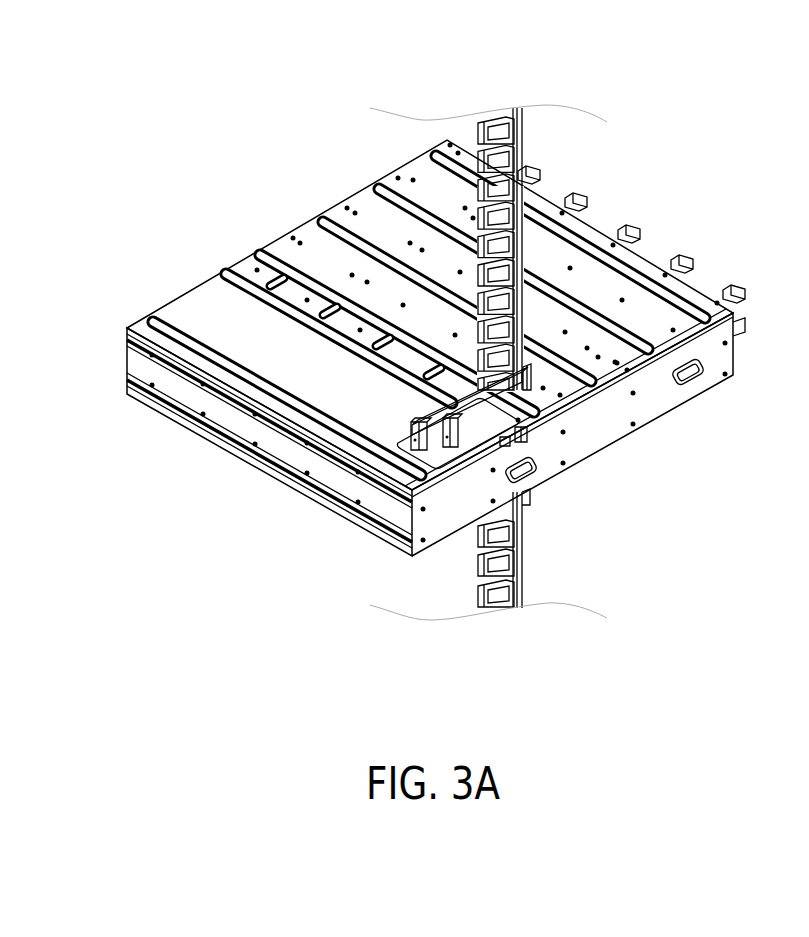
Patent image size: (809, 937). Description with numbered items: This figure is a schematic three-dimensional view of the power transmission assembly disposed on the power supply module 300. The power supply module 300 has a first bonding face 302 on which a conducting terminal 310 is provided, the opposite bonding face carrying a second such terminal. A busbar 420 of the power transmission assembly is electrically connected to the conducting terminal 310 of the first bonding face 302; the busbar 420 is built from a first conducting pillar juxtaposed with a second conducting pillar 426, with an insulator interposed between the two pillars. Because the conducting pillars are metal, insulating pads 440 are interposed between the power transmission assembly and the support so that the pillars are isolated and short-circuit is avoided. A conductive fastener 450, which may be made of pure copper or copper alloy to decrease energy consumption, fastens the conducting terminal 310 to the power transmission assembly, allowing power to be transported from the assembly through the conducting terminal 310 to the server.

The power supply module 300 is at (228, 202).
The first bonding face 302 is at (213, 318).
The conducting terminal 310 is at (528, 435).
The busbar 420 is at (597, 309).
The second conducting pillar 426 is at (515, 142).
The insulating pad 440 is at (512, 400).
The conductive fastener 450 is at (408, 422).